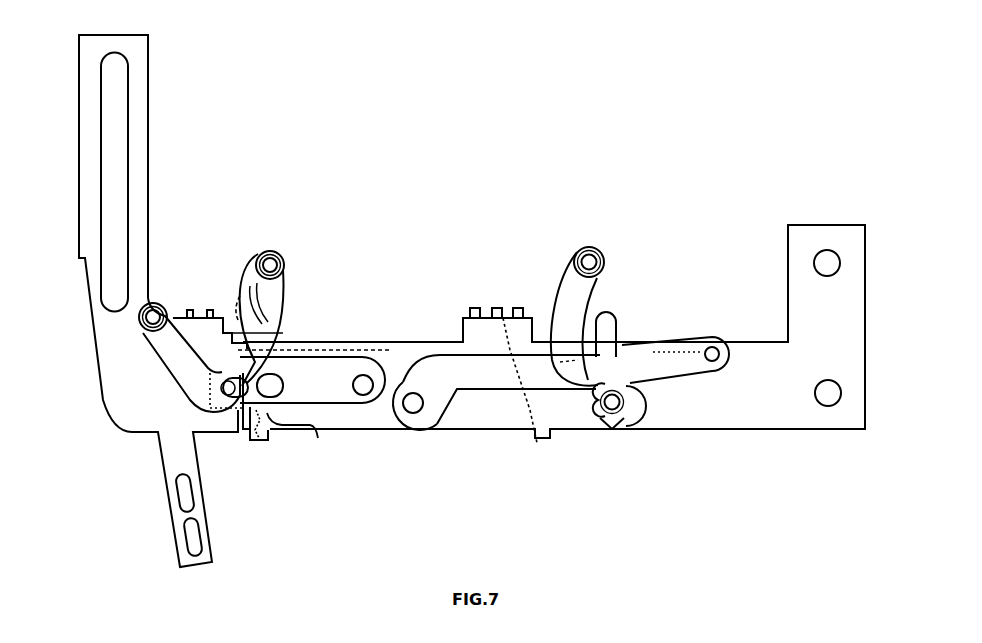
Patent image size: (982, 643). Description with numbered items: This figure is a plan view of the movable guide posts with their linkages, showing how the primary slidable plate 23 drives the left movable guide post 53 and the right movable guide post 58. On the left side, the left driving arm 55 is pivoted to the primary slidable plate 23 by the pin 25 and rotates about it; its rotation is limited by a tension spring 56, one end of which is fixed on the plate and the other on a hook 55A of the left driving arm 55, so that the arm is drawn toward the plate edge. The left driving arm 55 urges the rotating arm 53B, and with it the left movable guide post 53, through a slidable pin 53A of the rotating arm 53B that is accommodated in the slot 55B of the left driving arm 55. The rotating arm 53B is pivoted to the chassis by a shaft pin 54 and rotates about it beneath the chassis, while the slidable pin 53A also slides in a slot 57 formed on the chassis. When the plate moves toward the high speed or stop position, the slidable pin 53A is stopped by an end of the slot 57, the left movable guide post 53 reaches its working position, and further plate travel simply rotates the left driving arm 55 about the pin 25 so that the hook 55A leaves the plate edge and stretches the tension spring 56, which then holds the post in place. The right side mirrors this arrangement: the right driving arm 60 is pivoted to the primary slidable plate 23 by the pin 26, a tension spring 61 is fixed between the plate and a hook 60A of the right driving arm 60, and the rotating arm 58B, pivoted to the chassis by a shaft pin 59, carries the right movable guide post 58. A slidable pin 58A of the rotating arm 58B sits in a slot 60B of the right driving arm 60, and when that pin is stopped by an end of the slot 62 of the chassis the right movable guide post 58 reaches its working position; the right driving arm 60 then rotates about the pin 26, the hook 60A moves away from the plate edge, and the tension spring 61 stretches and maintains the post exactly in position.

The primary slidable plate 23 is at (137, 157).
The pin 25 is at (360, 378).
The pin 26 is at (405, 392).
The left movable guide post 53 is at (262, 254).
The slidable pin 53A is at (282, 352).
The rotating arm 53B is at (153, 302).
The shaft pin 54 is at (141, 300).
The left driving arm 55 is at (295, 429).
The hook 55A is at (262, 440).
The slot 55B is at (270, 383).
The tension spring 56 is at (282, 333).
The slot 57 is at (236, 295).
The right movable guide post 58 is at (591, 248).
The slidable pin 58A is at (614, 425).
The rotating arm 58B is at (598, 292).
The shaft pin 59 is at (708, 368).
The right driving arm 60 is at (628, 418).
The hook 60A is at (538, 440).
The slot 60B is at (659, 362).
The tension spring 61 is at (522, 378).
The slot 62 is at (612, 327).